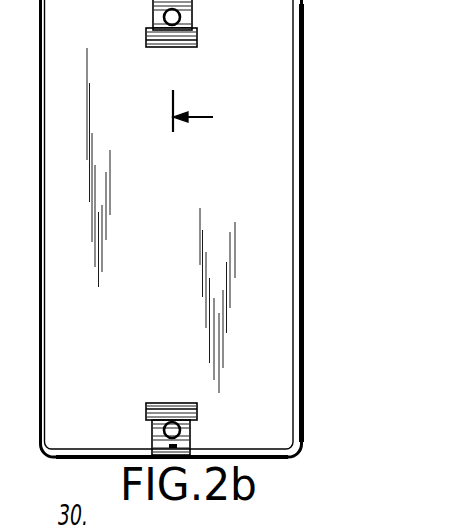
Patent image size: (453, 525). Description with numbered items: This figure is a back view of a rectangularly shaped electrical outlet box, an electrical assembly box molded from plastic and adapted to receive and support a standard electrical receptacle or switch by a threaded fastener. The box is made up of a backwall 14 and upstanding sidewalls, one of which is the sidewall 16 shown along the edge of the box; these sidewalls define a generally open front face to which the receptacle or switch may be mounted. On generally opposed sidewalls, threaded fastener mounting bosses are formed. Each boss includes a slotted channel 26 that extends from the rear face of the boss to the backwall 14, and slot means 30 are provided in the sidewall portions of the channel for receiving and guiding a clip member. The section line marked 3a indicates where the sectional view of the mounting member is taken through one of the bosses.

The backwall 14 is at (165, 265).
The sidewall 16 is at (315, 185).
The slotted channel 26 is at (167, 27).
The slot means 30 is at (168, 427).
The section line 3a is at (211, 114).